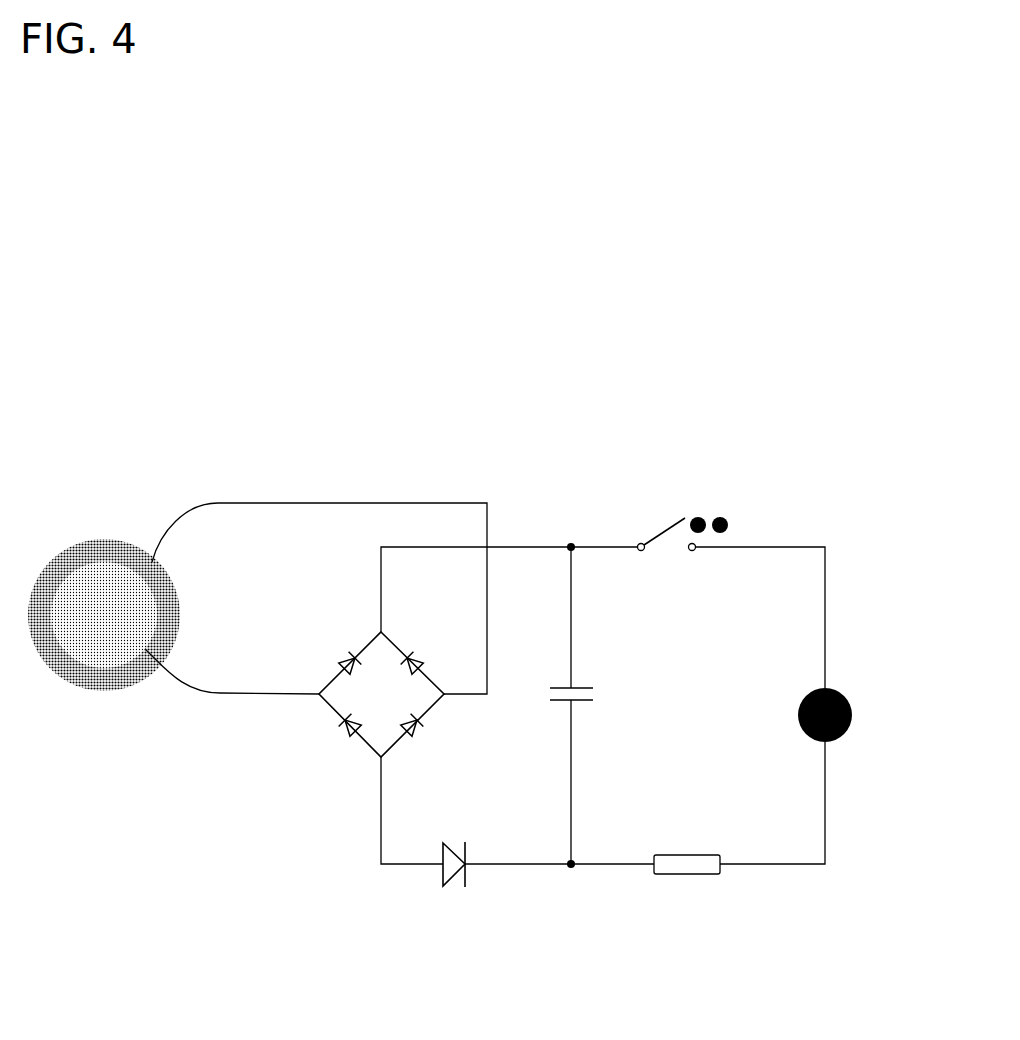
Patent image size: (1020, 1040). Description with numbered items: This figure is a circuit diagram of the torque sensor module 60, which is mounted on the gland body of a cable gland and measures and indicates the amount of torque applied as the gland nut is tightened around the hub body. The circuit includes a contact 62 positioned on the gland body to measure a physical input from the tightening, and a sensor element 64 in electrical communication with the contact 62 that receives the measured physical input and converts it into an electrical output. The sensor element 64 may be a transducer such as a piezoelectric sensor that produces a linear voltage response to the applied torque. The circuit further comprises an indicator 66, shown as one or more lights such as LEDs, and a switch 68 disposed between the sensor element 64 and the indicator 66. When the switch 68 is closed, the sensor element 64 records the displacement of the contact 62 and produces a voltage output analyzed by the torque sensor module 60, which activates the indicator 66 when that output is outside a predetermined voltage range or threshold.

The torque sensor module 60 is at (291, 398).
The contact 62 is at (97, 590).
The sensor element 64 is at (337, 712).
The indicator 66 is at (848, 698).
The switch 68 is at (657, 535).